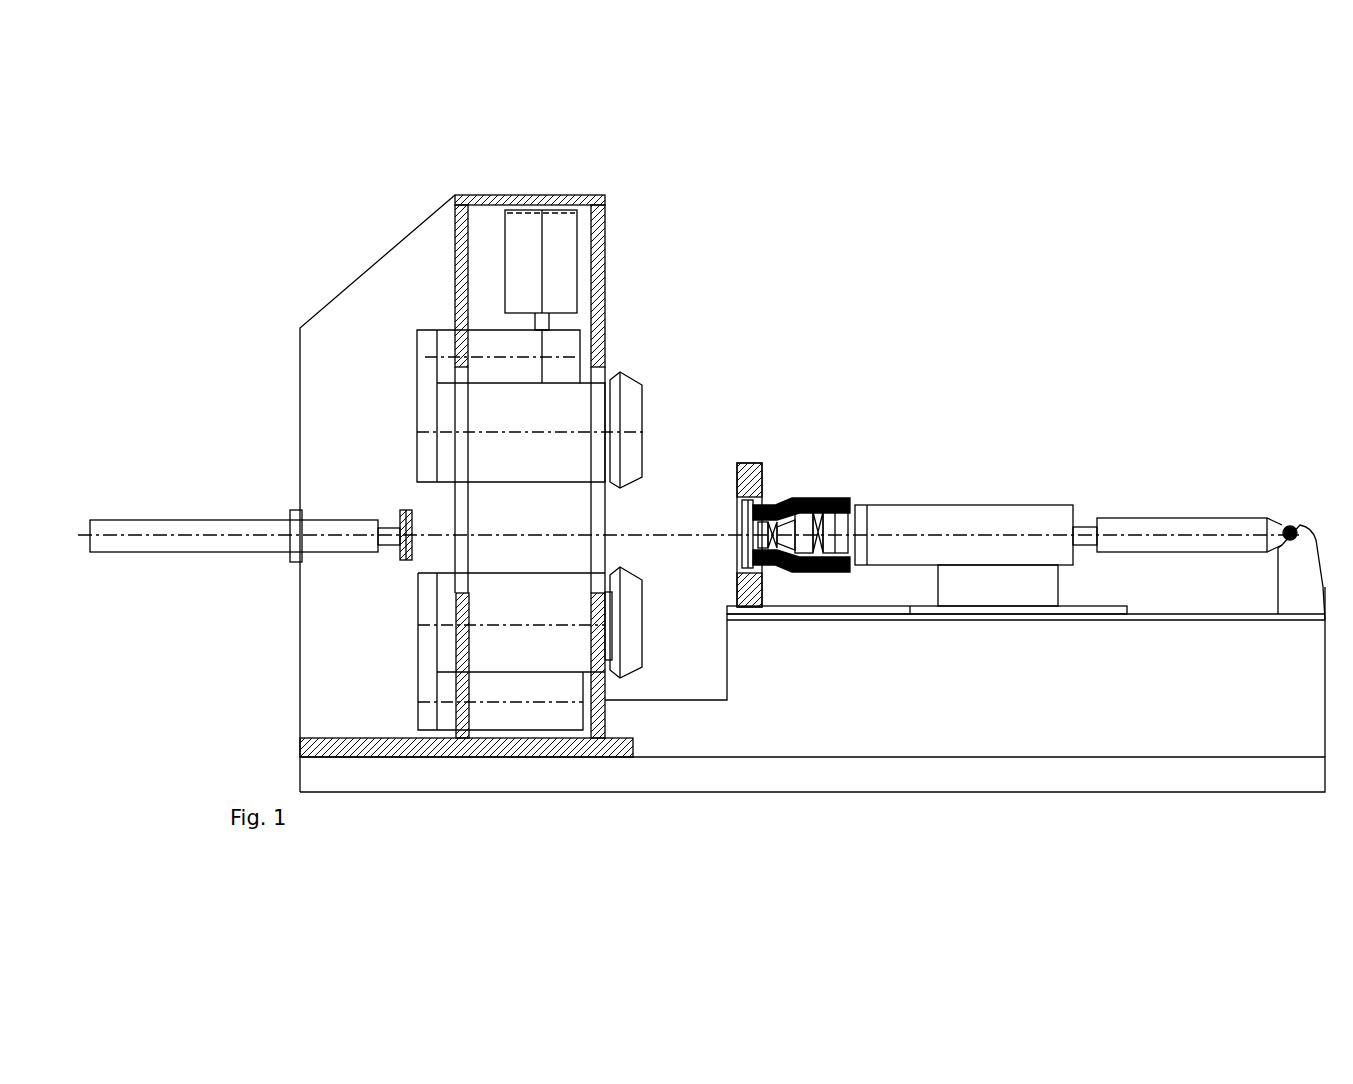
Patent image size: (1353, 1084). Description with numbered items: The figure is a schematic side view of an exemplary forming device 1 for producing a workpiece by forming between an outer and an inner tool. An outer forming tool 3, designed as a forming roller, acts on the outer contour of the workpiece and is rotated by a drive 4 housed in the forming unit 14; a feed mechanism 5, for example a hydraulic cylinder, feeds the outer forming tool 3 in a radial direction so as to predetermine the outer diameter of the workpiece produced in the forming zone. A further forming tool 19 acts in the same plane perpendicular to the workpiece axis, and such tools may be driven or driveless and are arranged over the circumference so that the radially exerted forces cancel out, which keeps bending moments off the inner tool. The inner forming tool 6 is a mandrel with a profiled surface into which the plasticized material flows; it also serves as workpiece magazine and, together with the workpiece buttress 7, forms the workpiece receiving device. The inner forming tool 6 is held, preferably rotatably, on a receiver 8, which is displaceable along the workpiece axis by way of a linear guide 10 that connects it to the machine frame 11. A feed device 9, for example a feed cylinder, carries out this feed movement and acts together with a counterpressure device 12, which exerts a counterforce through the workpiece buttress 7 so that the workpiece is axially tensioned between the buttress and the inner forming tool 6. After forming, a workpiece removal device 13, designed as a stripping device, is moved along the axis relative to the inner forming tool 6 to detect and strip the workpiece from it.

The device 1 is at (853, 267).
The outer forming tool 3 is at (643, 402).
The drive 4 is at (437, 328).
The feed mechanism 5 is at (567, 290).
The inner forming tool 6 is at (827, 497).
The workpiece buttress 7 is at (400, 508).
The receiver 8 is at (1005, 512).
The feed device 9 is at (1213, 518).
The linear guide 10 is at (913, 617).
The machine frame 11 is at (850, 758).
The counterpressure device 12 is at (170, 530).
The workpiece removal device 13 is at (757, 463).
The forming unit 14 is at (530, 195).
The further forming tools 19 is at (643, 582).